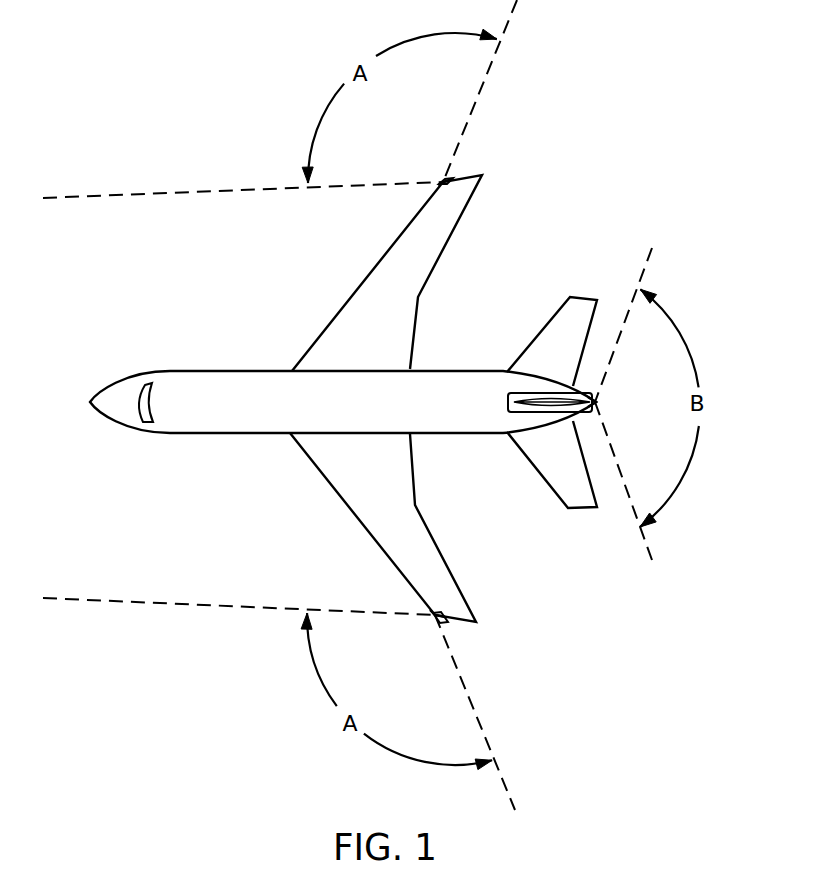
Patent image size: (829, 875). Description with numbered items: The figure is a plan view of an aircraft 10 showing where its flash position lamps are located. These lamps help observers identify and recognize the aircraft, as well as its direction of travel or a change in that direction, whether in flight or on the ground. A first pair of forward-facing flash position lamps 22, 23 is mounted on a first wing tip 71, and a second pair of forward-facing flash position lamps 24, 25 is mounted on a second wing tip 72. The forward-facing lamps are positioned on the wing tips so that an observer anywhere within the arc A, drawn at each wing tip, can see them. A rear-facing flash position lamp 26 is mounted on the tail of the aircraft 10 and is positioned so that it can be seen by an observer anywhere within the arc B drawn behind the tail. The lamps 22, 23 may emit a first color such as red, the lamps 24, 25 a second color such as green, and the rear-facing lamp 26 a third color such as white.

The aircraft 10 is at (185, 433).
The forward-facing flash position lamp 22 is at (440, 620).
The forward-facing flash position lamp 23 is at (441, 624).
The forward-facing flash position lamp 24 is at (440, 183).
The forward-facing flash position lamp 25 is at (445, 180).
The rear-facing flash position lamp 26 is at (596, 399).
The first wing tip 71 is at (452, 623).
The second wing tip 72 is at (462, 176).